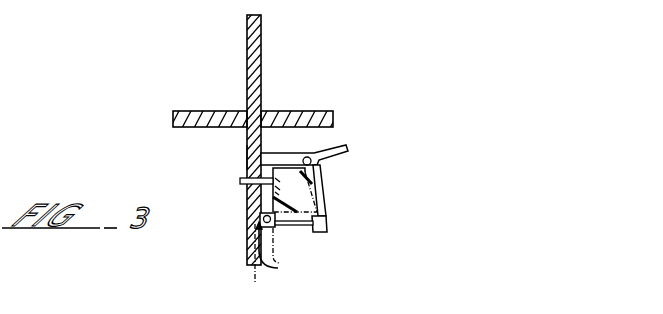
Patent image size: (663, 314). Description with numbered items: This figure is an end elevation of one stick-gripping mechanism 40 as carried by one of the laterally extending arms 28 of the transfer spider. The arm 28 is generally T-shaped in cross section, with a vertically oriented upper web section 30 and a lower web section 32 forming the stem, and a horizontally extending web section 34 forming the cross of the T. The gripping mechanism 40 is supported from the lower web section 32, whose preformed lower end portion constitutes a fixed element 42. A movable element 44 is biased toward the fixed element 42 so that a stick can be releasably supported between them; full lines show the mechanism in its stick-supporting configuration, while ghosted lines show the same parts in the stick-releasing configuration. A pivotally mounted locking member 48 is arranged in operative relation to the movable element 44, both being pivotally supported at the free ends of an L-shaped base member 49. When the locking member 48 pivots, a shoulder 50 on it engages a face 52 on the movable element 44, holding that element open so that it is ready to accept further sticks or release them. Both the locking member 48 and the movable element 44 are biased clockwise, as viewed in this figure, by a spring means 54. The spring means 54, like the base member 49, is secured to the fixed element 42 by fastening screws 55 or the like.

The laterally extending arm 28 is at (277, 73).
The vertically-oriented web section 30 is at (247, 73).
The vertically-oriented web section 32 is at (247, 157).
The horizontally-extending web section 34 is at (187, 113).
The stick-gripping mechanism 40 is at (334, 253).
The fixed element 42 is at (247, 228).
The movable element 44 is at (279, 267).
The locking member 48 is at (327, 226).
The L-shaped base member 49 is at (266, 153).
The shoulder 50 is at (317, 214).
The face 52 is at (308, 226).
The spring means 54 is at (295, 190).
The fastening screw 55 is at (241, 184).